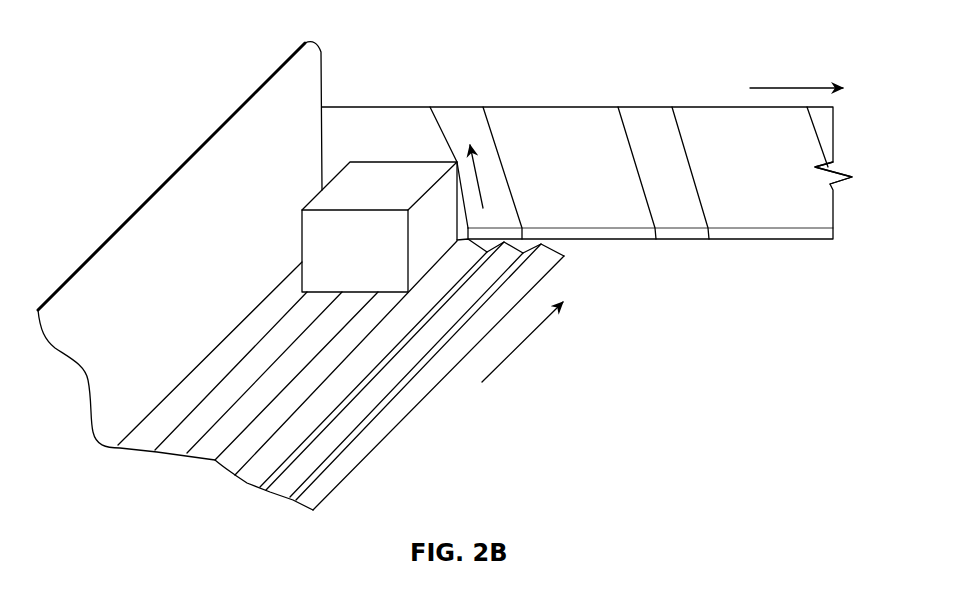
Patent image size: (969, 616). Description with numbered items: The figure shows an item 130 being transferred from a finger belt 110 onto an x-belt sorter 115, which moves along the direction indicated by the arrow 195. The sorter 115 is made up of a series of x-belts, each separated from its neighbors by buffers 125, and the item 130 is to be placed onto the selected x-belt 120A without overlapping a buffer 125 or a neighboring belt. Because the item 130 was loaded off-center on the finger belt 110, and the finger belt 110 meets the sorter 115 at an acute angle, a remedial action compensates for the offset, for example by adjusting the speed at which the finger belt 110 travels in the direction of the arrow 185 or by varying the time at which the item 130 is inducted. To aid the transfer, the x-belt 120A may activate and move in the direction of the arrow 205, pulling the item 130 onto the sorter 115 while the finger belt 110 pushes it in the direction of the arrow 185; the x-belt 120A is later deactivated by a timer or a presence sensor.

The finger belt 110 is at (402, 410).
The x-belt sorter 115 is at (838, 154).
The x-belt 120A is at (370, 117).
The buffer 125 is at (457, 117).
The item 130 is at (322, 192).
The arrow indicating finger belt direction 185 is at (520, 346).
The arrow indicating sorter direction 195 is at (790, 84).
The arrow indicating x-belt movement 205 is at (476, 177).